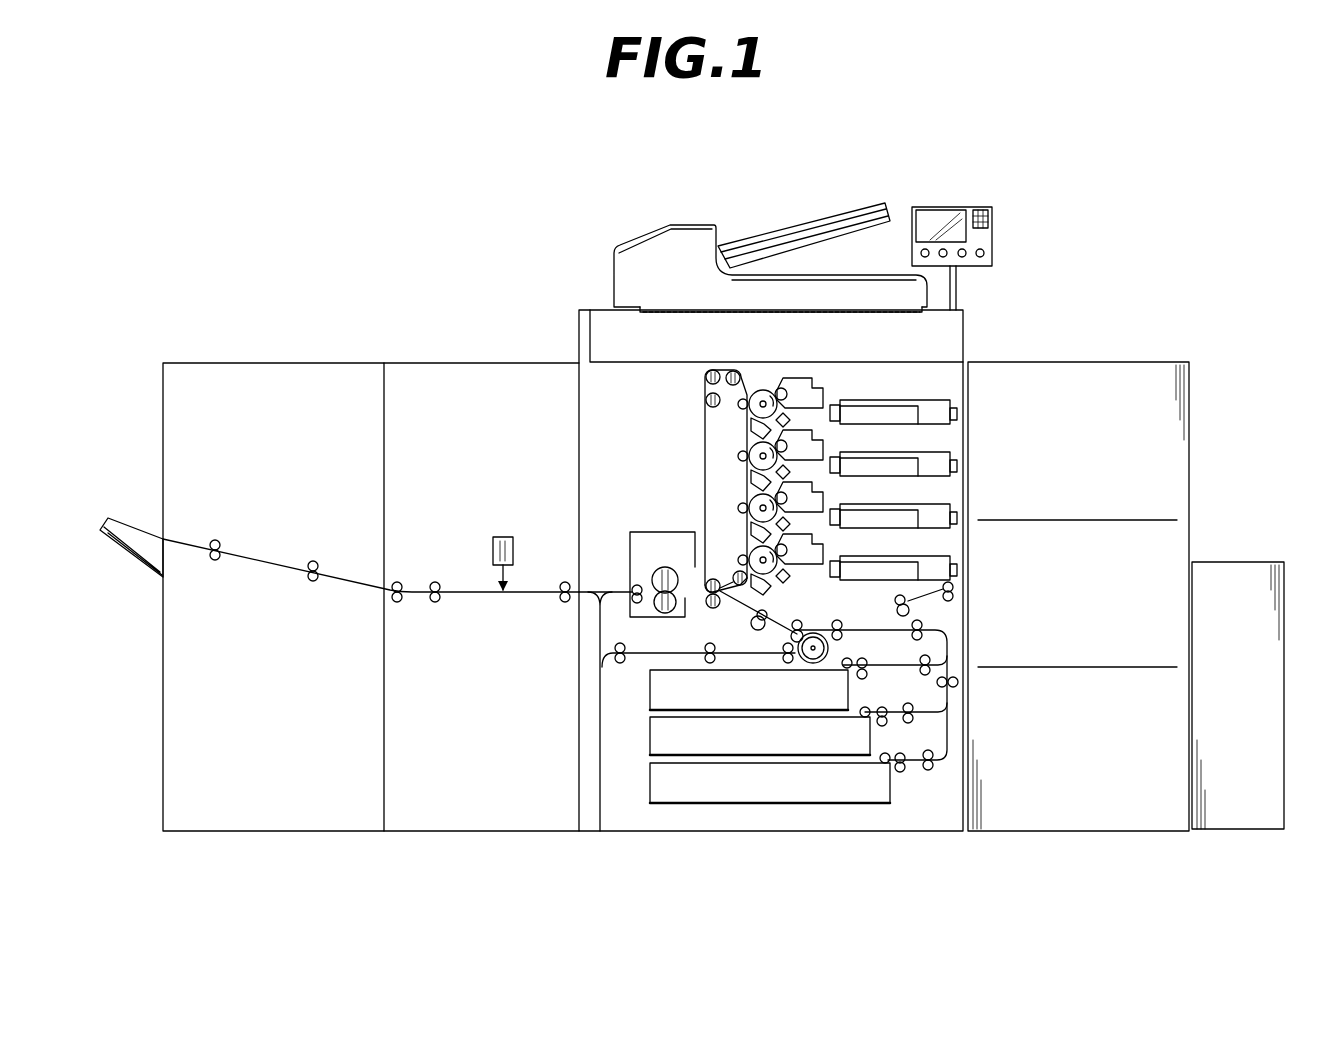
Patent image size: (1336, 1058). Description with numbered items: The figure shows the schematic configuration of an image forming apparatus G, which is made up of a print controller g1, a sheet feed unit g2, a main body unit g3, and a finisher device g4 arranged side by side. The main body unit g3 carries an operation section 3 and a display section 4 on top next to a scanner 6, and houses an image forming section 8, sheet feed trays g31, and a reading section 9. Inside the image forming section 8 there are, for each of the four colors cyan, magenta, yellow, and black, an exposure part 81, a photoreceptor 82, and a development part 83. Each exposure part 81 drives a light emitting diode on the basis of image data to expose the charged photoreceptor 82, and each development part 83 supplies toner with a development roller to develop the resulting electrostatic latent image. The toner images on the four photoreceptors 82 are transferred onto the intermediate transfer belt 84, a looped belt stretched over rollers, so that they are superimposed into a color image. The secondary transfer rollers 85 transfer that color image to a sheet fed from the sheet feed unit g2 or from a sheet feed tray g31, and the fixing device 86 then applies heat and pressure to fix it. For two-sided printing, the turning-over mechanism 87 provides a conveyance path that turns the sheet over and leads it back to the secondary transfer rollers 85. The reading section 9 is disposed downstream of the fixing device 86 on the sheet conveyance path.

The image forming apparatus G is at (1000, 138).
The print controller g1 is at (1246, 560).
The sheet feed unit g2 is at (1146, 361).
The main body unit g3 is at (578, 337).
The finisher device g4 is at (233, 363).
The sheet feed trays g31 is at (722, 808).
The operation section 3 is at (993, 225).
The display section 4 is at (928, 218).
The scanner 6 is at (605, 306).
The image forming section 8 is at (593, 421).
The reading section 9 is at (508, 537).
The exposure part 81 is at (955, 466).
The photoreceptor 82 is at (752, 459).
The development part 83 is at (827, 445).
The intermediate transfer belt 84 is at (705, 415).
The secondary transfer rollers 85 is at (710, 599).
The fixing device 86 is at (645, 532).
The turning-over mechanism 87 is at (608, 676).